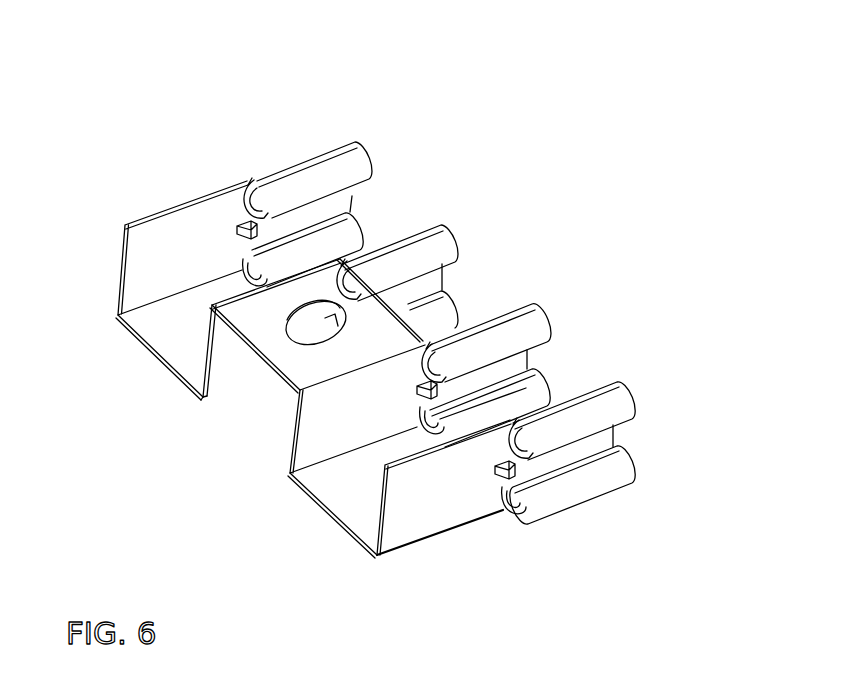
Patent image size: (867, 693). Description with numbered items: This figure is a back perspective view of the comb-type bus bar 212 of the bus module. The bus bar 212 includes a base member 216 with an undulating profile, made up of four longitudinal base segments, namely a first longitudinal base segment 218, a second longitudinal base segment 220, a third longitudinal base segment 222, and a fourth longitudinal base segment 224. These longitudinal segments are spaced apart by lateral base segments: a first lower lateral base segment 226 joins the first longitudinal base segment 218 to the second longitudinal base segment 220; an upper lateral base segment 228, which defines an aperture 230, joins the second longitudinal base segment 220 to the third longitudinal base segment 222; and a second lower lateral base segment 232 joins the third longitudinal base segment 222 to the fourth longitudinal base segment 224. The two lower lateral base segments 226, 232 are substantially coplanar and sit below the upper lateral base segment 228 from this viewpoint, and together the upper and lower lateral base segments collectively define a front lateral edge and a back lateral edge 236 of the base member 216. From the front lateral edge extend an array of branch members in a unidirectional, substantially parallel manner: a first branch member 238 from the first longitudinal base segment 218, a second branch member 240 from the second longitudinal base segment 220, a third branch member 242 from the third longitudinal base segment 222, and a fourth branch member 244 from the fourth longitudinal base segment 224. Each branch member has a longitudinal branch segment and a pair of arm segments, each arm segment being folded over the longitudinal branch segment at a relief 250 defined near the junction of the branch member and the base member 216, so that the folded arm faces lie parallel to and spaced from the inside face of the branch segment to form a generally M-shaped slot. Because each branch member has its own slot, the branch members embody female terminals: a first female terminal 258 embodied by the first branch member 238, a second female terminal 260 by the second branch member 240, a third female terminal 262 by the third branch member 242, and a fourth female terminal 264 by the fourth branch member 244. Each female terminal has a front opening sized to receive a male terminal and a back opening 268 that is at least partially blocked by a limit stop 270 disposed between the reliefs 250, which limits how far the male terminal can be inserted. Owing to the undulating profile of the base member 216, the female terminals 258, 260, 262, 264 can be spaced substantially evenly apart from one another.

The bus bar 212 is at (287, 105).
The base member 216 is at (200, 401).
The first longitudinal base segment 218 is at (450, 508).
The second longitudinal base segment 220 is at (313, 443).
The third longitudinal base segment 222 is at (233, 370).
The fourth longitudinal base segment 224 is at (143, 273).
The first lower lateral base segment 226 is at (350, 517).
The upper lateral base segment 228 is at (303, 362).
The aperture 230 is at (200, 357).
The second lower lateral base segment 232 is at (170, 330).
The back lateral edge 236 is at (327, 510).
The first branch member 238 is at (648, 408).
The second branch member 240 is at (563, 328).
The third branch member 242 is at (478, 246).
The fourth branch member 244 is at (395, 165).
The relief 250 is at (248, 187).
The first female terminal 258 is at (623, 372).
The second female terminal 260 is at (538, 292).
The third female terminal 262 is at (450, 192).
The fourth female terminal 264 is at (362, 132).
The back opening 268 is at (522, 430).
The limit stop 270 is at (500, 500).